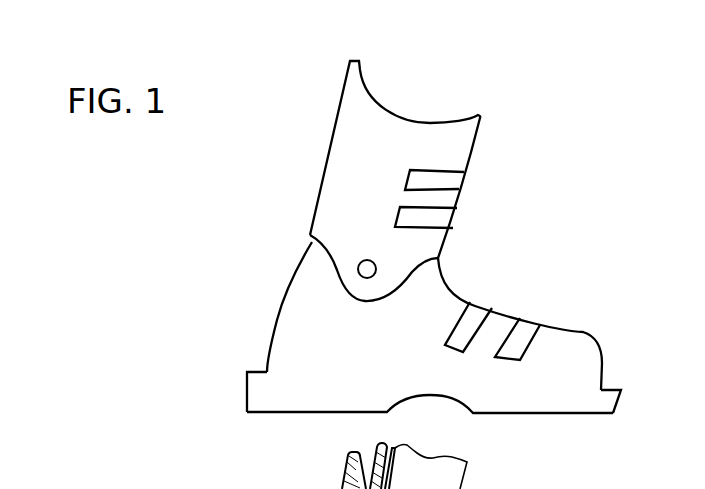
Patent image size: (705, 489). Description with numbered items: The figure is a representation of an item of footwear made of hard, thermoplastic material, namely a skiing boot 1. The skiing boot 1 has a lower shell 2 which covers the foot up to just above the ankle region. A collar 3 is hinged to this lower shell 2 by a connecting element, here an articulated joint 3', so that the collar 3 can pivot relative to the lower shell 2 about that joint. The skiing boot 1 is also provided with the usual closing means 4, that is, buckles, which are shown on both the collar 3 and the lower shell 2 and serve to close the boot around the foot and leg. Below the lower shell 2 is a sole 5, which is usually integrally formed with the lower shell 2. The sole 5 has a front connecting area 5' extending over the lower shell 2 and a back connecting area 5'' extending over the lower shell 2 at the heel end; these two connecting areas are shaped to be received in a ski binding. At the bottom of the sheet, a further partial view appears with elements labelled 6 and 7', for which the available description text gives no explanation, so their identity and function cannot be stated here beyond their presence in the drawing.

The skiing boot 1 is at (548, 205).
The lower shell 2 is at (565, 368).
The collar 3 is at (377, 181).
The articulated joint 3' is at (316, 209).
The closing means 4 is at (472, 327).
The sole 5 is at (427, 435).
The front connecting area 5' is at (639, 370).
The back connecting area 5'' is at (222, 374).
The binding element 6 is at (472, 466).
The lamellae 7' is at (341, 466).